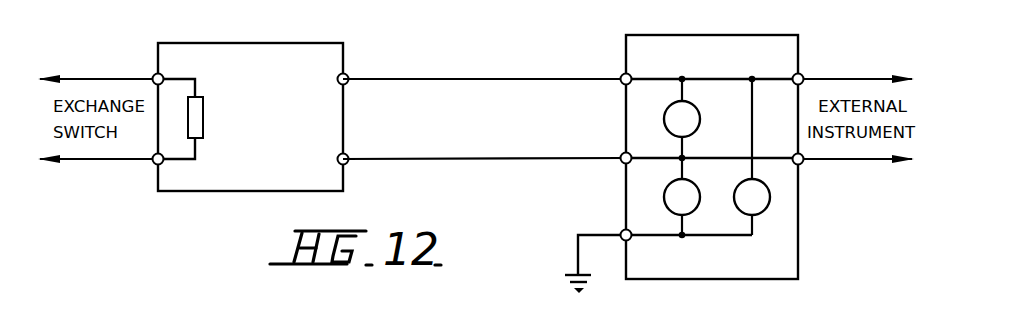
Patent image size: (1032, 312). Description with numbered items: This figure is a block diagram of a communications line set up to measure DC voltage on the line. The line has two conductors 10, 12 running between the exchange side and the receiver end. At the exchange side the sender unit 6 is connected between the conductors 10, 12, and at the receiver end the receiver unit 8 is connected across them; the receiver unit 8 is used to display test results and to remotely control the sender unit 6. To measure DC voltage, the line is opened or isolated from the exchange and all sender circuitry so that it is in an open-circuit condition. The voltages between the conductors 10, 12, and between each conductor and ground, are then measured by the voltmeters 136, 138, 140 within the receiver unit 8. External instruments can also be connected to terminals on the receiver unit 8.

The sender unit 6 is at (180, 36).
The receiver unit 8 is at (808, 38).
The conductor 10 is at (468, 75).
The conductor 12 is at (484, 181).
The voltmeter 136 is at (663, 111).
The voltmeter 138 is at (664, 190).
The voltmeter 140 is at (768, 207).